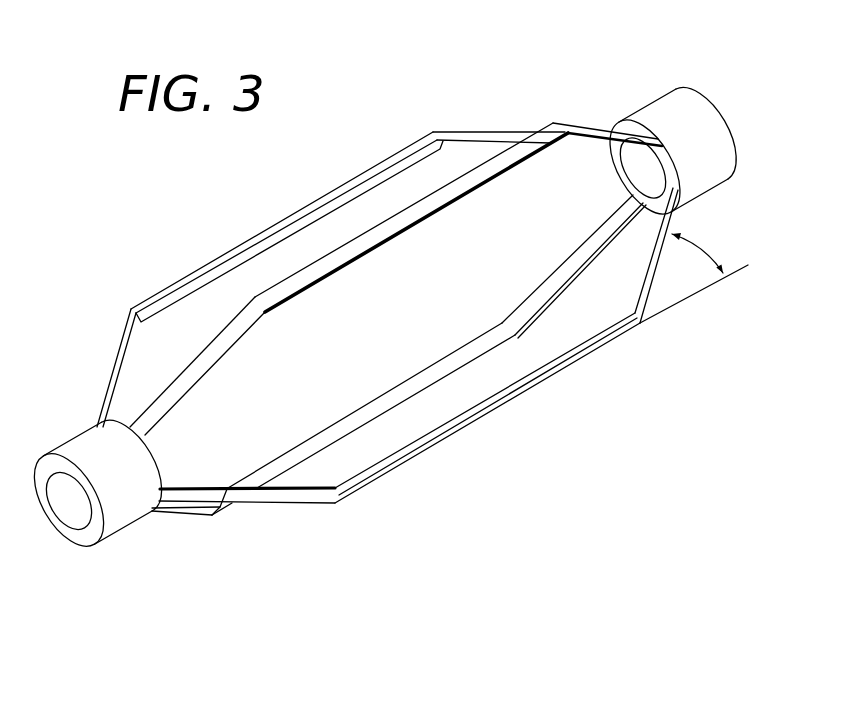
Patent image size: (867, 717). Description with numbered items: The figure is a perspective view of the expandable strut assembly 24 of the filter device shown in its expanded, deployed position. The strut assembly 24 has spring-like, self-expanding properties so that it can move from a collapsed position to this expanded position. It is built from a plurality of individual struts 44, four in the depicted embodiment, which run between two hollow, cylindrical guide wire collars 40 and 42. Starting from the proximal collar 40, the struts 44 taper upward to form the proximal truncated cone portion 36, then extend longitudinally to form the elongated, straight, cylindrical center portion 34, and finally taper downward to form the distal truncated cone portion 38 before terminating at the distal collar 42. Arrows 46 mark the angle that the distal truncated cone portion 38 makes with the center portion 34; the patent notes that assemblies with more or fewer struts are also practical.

The strut assembly 24 is at (372, 108).
The center portion 34 is at (510, 400).
The proximal end portion 36 is at (110, 375).
The distal end portion 38 is at (492, 130).
The proximal guide wire collar 40 is at (120, 507).
The distal guide wire collar 42 is at (677, 104).
The struts 44 is at (215, 258).
The arrows 46 is at (700, 242).